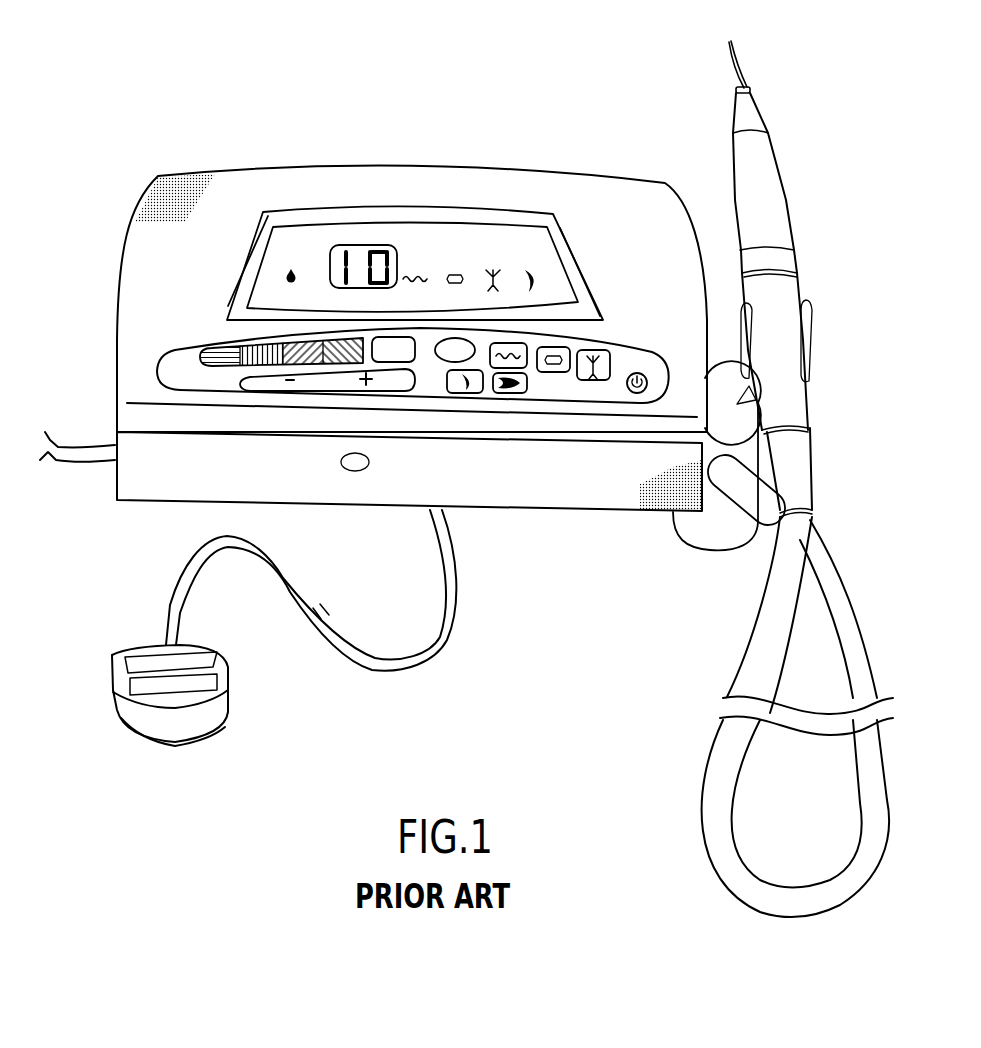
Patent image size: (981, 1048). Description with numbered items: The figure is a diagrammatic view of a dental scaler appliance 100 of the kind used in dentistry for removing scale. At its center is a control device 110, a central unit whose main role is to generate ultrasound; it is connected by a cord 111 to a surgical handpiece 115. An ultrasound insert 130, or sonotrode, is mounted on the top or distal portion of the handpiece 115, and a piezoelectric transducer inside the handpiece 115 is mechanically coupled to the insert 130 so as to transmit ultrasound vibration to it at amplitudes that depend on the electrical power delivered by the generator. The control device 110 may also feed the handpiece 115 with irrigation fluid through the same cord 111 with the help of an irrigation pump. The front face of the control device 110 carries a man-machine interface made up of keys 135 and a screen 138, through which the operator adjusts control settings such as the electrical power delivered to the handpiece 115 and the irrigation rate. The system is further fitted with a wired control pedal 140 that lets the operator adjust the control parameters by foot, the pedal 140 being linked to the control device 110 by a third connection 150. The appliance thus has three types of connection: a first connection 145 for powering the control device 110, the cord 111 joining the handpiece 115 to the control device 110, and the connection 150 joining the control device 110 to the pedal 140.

The scaler appliance 100 is at (224, 86).
The control device 110 is at (497, 165).
The screen 138 is at (340, 237).
The keys 135 is at (200, 350).
The surgical handpiece 115 is at (770, 193).
The ultrasound insert 130 is at (747, 62).
The cord 111 is at (837, 587).
The power cord 145 is at (73, 468).
The control pedal 140 is at (137, 647).
The third connection 150 is at (403, 668).